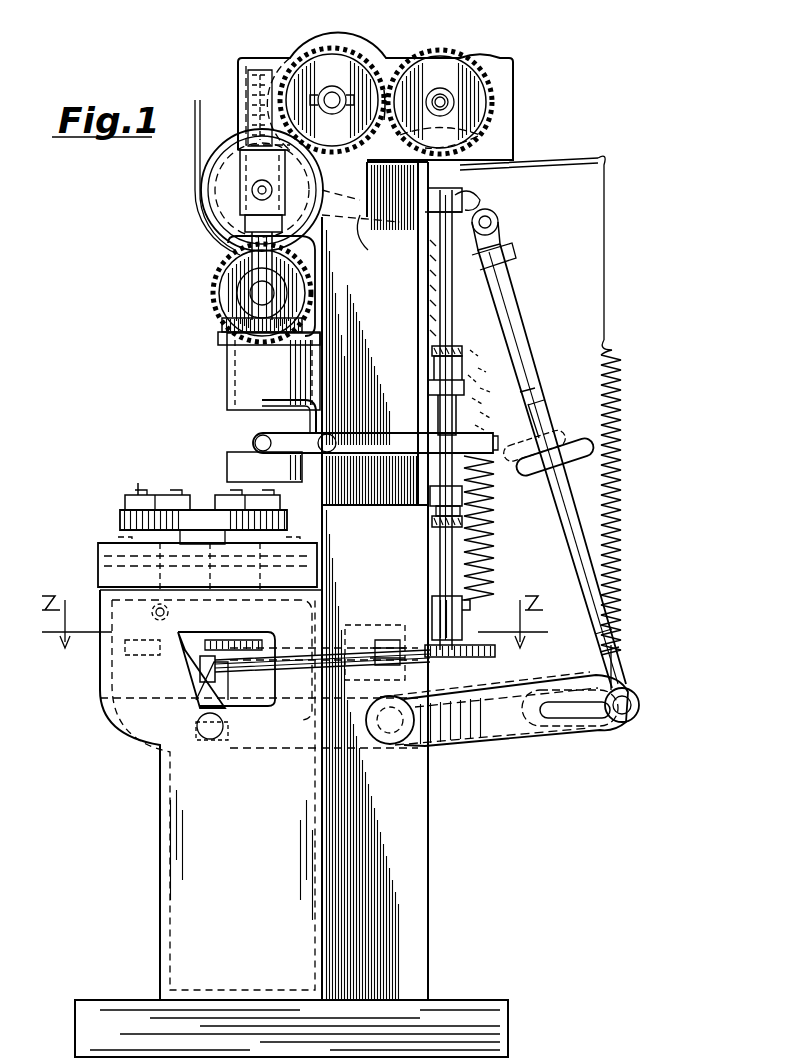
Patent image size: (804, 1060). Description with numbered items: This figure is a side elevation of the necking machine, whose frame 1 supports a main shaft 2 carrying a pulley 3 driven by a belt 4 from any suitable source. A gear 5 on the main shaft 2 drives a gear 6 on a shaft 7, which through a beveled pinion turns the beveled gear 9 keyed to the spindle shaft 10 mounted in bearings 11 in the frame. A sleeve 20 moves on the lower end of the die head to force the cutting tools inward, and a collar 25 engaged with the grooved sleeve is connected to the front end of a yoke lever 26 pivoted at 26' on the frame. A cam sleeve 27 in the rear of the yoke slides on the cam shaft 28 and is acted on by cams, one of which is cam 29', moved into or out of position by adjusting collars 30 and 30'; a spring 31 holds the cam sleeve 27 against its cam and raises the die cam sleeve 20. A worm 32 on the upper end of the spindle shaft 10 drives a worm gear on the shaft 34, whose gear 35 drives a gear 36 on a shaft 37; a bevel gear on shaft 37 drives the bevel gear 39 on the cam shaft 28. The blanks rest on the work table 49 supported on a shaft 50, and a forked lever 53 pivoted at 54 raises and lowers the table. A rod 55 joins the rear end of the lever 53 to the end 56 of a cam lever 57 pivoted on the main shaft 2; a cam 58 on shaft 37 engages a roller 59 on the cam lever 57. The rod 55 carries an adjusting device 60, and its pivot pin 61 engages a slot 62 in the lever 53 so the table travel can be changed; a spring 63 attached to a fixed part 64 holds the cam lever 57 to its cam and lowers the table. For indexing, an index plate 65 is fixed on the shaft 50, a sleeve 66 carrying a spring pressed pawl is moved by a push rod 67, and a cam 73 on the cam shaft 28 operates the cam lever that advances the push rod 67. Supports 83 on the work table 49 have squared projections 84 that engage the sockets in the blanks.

The frame 1 is at (158, 842).
The main shaft 2 is at (258, 192).
The pulley 3 is at (225, 190).
The belt 4 is at (195, 154).
The gear 5 is at (222, 232).
The gear 6 is at (215, 305).
The shaft 7 is at (222, 322).
The beveled gear 9 is at (228, 338).
The spindle shaft 10 is at (258, 245).
The bearings 11 is at (245, 187).
The sleeve 20 is at (230, 468).
The collar 25 is at (255, 447).
The yoke lever 26 is at (375, 442).
The pivot 26' is at (362, 419).
The sleeve 27 is at (462, 492).
The cam shaft 28 is at (452, 292).
The cam 29' is at (467, 390).
The adjusting collar 30 is at (484, 533).
The adjusting collar 30' is at (461, 336).
The spring 31 is at (494, 560).
The worm 32 is at (250, 85).
The shaft 34 is at (333, 98).
The gear 35 is at (336, 52).
The gear 36 is at (456, 60).
The shaft 37 is at (446, 102).
The bevel gear 39 is at (455, 132).
The work table 49 is at (120, 524).
The shaft 50 is at (190, 580).
The lever 53 is at (518, 733).
The pivot 54 is at (395, 722).
The rod 55 is at (530, 332).
The end of cam lever 56 is at (498, 222).
The cam lever 57 is at (375, 333).
The cam 58 is at (386, 90).
The roller 59 is at (486, 197).
The adjusting device 60 is at (598, 456).
The pivot pin 61 is at (634, 716).
The slot 62 is at (592, 718).
The spring 63 is at (622, 492).
The fixed part 64 is at (585, 158).
The index plate 65 is at (155, 650).
The sleeve 66 is at (200, 668).
The push rod 67 is at (296, 662).
The cam 73 is at (475, 657).
The supports 83 is at (130, 504).
The squared projections 84 is at (140, 488).